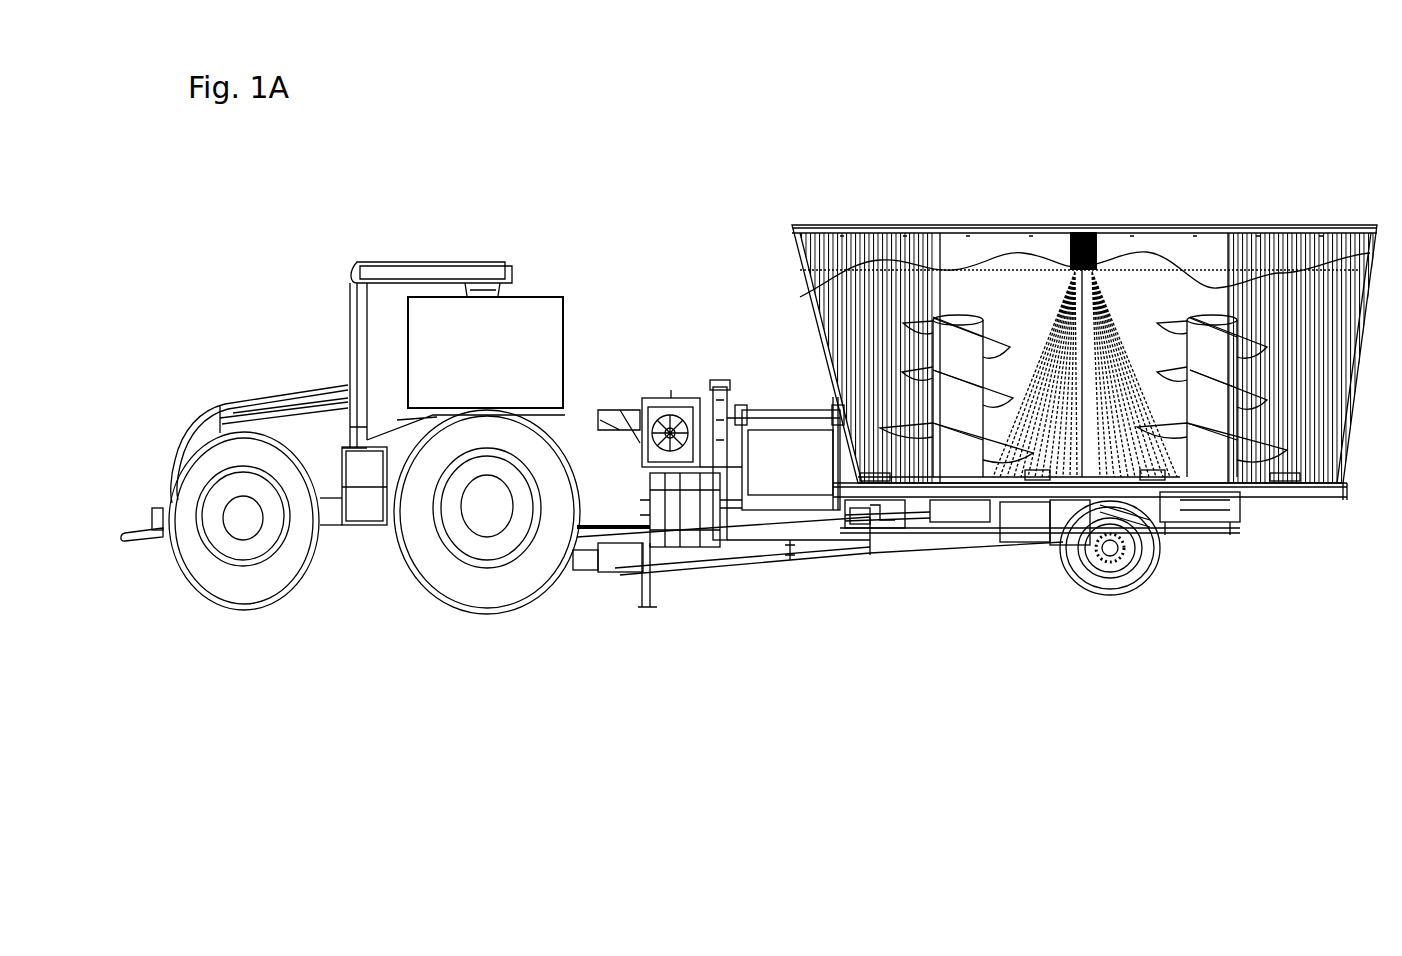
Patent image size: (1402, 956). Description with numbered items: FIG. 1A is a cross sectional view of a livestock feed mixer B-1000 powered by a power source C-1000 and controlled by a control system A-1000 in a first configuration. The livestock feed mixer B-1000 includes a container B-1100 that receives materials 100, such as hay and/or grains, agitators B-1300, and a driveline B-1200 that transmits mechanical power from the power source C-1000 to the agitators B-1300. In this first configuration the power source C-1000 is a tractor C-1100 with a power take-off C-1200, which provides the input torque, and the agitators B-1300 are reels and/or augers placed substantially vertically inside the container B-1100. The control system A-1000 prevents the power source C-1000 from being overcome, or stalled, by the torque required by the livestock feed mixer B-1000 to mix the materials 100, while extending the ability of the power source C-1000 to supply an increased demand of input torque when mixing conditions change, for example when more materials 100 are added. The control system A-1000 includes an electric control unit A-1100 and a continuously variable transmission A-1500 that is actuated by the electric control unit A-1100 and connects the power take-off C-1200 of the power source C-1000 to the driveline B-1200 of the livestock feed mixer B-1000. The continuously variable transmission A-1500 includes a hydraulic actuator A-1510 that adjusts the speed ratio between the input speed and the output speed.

The materials 100 is at (1170, 228).
The power source C-1000 is at (268, 308).
The tractor C-1100 is at (490, 273).
The power take-off C-1200 is at (613, 543).
The control system A-1000 is at (895, 628).
The electric control unit A-1100 is at (563, 380).
The continuously variable transmission A-1500 is at (712, 560).
The hydraulic actuator A-1510 is at (720, 503).
The livestock feed mixer B-1000 is at (1092, 190).
The container B-1100 is at (873, 232).
The driveline B-1200 is at (905, 545).
The agitators B-1300 is at (957, 383).